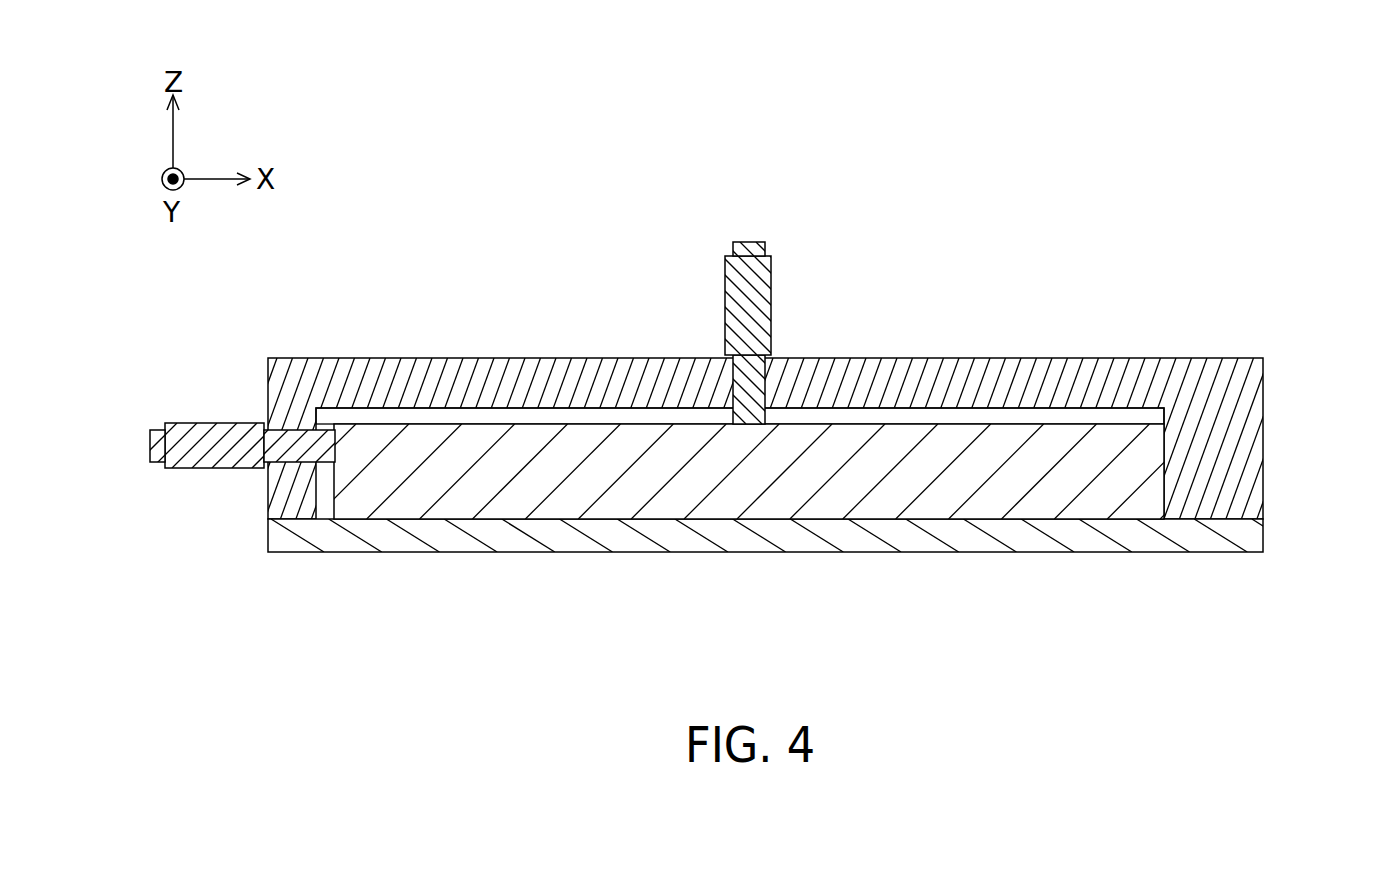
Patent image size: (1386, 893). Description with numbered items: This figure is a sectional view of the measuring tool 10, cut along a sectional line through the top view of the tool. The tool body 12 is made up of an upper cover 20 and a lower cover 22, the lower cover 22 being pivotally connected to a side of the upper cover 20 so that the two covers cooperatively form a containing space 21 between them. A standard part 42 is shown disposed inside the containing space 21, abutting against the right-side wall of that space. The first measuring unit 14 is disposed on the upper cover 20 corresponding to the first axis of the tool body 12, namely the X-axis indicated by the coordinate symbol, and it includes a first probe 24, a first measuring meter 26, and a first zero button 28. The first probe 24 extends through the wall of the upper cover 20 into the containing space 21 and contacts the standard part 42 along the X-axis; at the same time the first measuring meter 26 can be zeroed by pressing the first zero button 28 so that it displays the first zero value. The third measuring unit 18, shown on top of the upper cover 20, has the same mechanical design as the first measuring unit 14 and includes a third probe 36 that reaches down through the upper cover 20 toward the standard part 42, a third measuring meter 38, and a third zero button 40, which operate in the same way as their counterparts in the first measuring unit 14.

The measuring tool 10 is at (1103, 182).
The tool body 12 is at (1325, 394).
The first measuring unit 14 is at (337, 632).
The third measuring unit 18 is at (851, 198).
The upper cover 20 is at (1247, 427).
The containing space 21 is at (1089, 414).
The lower cover 22 is at (1248, 537).
The first probe 24 is at (325, 453).
The first measuring meter 26 is at (217, 450).
The first zero button 28 is at (158, 453).
The third probe 36 is at (762, 377).
The third measuring meter 38 is at (760, 298).
The third zero button 40 is at (758, 250).
The standard part 42 is at (1045, 498).